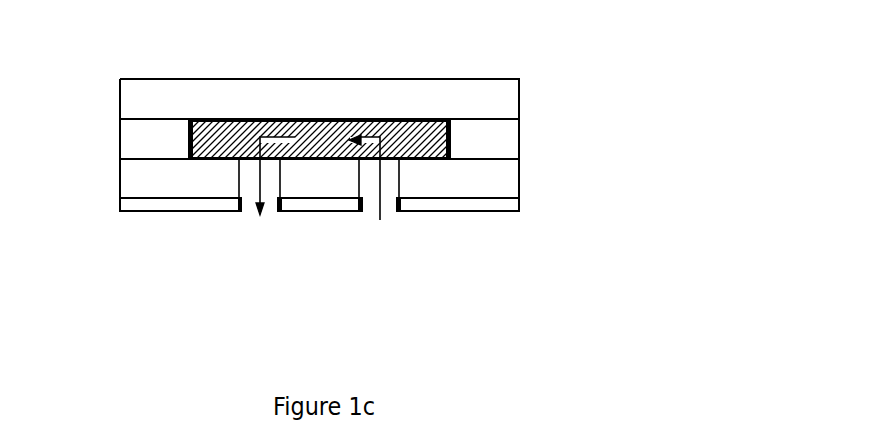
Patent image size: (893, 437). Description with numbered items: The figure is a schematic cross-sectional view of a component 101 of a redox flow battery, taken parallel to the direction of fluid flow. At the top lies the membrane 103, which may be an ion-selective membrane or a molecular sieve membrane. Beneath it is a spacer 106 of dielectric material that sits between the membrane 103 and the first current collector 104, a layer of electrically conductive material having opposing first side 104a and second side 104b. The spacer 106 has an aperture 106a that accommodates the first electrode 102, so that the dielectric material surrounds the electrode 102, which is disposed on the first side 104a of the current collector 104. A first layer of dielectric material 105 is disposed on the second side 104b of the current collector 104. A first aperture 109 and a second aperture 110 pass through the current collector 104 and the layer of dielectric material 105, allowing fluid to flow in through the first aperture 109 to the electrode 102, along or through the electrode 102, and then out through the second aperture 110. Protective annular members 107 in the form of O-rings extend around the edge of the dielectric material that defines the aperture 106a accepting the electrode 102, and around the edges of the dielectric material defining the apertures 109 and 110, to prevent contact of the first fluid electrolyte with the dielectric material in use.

The component 101 is at (105, 290).
The first electrode 102 is at (317, 127).
The membrane 103 is at (399, 102).
The first current collector 104 is at (502, 185).
The first side 104a is at (130, 159).
The second side 104b is at (120, 199).
The first layer of dielectric material 105 is at (503, 205).
The spacer 106 is at (503, 143).
The aperture 106a is at (204, 128).
The protective annular member 107 is at (188, 123).
The first aperture 109 is at (389, 210).
The second aperture 110 is at (249, 213).